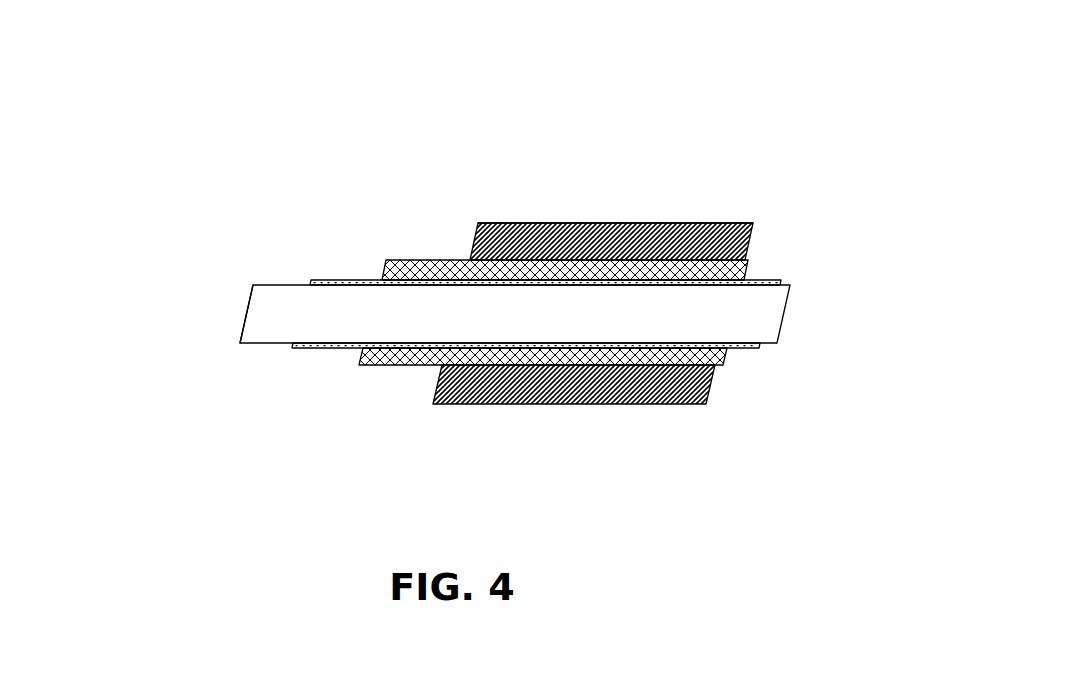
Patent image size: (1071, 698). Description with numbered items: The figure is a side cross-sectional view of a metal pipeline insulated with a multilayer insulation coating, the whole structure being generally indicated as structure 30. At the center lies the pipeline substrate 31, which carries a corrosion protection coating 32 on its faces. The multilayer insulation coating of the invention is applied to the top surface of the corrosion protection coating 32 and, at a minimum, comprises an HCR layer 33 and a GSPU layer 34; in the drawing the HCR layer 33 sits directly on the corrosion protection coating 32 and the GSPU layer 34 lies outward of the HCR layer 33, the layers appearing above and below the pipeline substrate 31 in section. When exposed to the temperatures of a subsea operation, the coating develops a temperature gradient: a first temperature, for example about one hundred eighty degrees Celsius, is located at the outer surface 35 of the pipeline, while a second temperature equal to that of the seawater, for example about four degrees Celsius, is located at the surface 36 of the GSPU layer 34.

The multilayer coated pipeline structure 30 is at (576, 90).
The pipeline substrate 31 is at (265, 311).
The corrosion protection coating 32 is at (305, 282).
The HCR layer 33 is at (381, 277).
The GSPU layer 34 is at (567, 240).
The outer surface of the pipeline 35 is at (258, 343).
The surface of the GSPU coating layer 36 is at (632, 223).